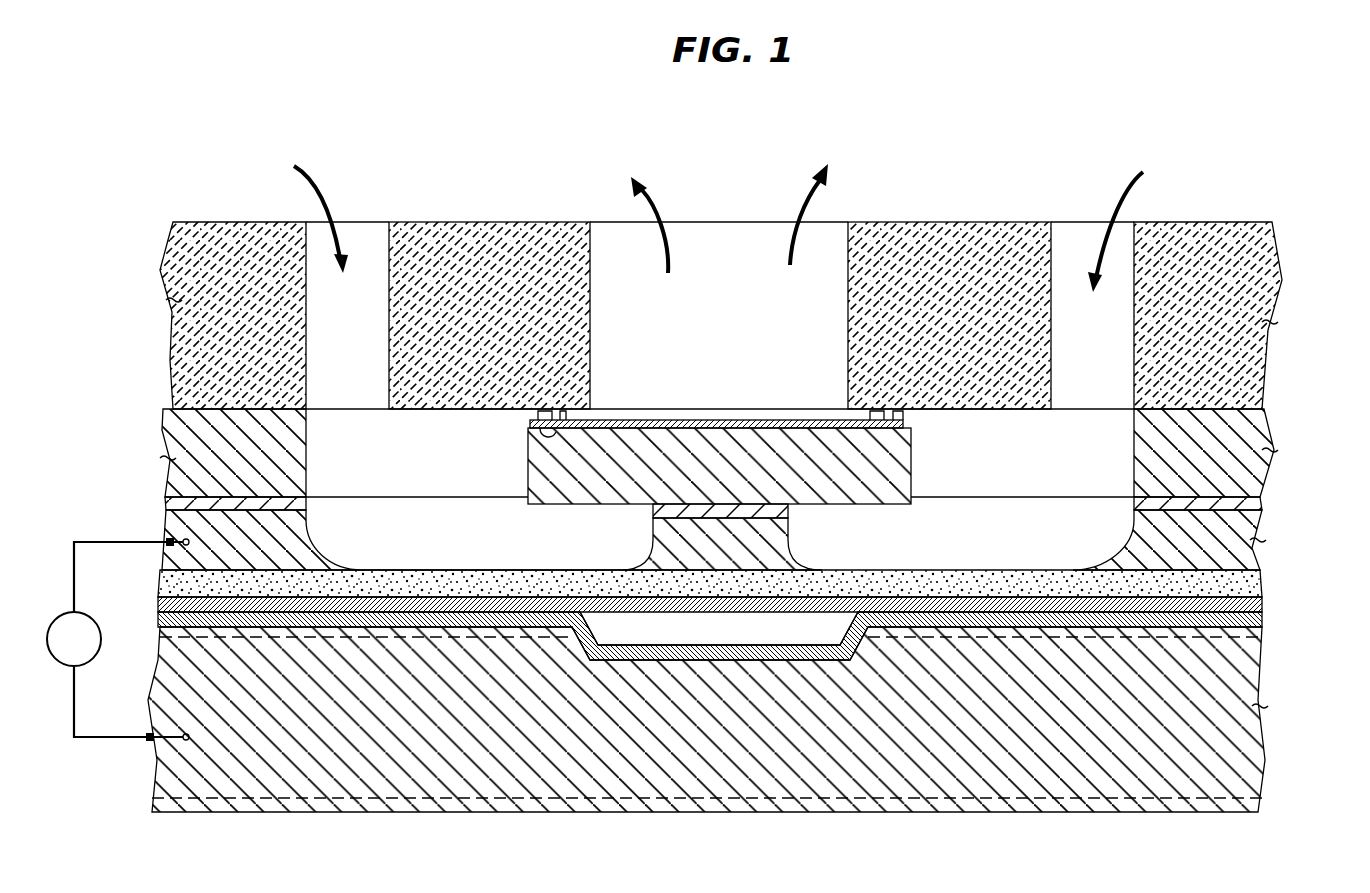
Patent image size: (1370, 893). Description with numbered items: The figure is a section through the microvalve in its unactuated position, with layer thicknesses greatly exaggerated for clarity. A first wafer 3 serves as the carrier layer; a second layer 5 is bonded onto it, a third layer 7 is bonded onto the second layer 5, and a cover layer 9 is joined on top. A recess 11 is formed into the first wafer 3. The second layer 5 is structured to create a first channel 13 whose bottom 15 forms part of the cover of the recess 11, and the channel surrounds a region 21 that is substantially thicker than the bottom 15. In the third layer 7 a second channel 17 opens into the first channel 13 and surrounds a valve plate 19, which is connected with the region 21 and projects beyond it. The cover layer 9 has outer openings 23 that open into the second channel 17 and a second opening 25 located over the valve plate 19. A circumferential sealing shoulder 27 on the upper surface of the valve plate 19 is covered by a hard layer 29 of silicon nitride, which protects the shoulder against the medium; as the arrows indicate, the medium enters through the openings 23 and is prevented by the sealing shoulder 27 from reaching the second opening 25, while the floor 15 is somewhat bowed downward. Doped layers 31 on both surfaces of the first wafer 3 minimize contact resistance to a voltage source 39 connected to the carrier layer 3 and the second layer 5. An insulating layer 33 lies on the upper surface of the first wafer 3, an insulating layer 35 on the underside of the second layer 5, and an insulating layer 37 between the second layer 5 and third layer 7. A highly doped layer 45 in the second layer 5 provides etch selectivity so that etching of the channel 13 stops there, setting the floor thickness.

The first wafer 3 is at (1256, 752).
The second layer 5 is at (1252, 552).
The third layer 7 is at (1255, 428).
The cover layer 9 is at (1272, 254).
The recess 11 is at (765, 625).
The first channel 13 is at (1038, 534).
The bottom 15 is at (600, 572).
The second channel 17 is at (1076, 467).
The valve plate 19 is at (846, 474).
The region 21 is at (715, 554).
The outer openings 23 is at (362, 234).
The second opening 25 is at (714, 238).
The sealing shoulder 27 is at (545, 433).
The hard layer 29 is at (905, 415).
The doped layer 31 is at (1256, 636).
The insulating layer 33 is at (1262, 618).
The insulating layer 35 is at (1262, 603).
The insulating layer 37 is at (1258, 500).
The voltage source 39 is at (55, 620).
The layer 45 is at (1262, 582).